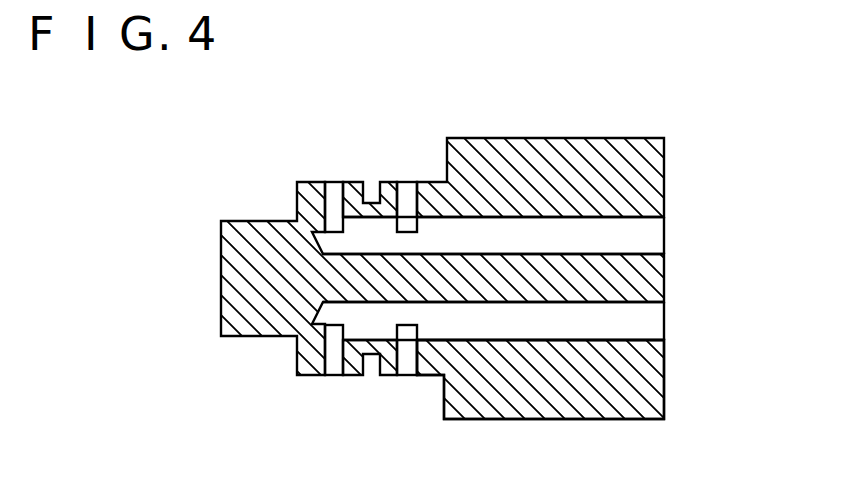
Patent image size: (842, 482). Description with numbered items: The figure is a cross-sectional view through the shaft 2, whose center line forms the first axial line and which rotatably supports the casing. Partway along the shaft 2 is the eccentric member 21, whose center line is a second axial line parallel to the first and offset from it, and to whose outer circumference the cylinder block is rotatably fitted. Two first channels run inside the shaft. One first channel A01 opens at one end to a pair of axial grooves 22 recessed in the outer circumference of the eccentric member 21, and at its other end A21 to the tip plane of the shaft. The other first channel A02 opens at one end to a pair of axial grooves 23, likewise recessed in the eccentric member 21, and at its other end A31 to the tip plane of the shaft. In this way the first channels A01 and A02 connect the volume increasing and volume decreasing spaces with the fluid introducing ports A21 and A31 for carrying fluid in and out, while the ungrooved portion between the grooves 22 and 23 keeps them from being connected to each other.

The shaft 2 is at (669, 134).
The eccentric member 21 is at (418, 378).
The axial grooves 22 is at (333, 367).
The axial grooves 23 is at (335, 192).
The first channel A02 is at (590, 237).
The fluid introducing port A31 is at (665, 237).
The fluid introducing port A21 is at (665, 320).
The first channel A01 is at (597, 325).